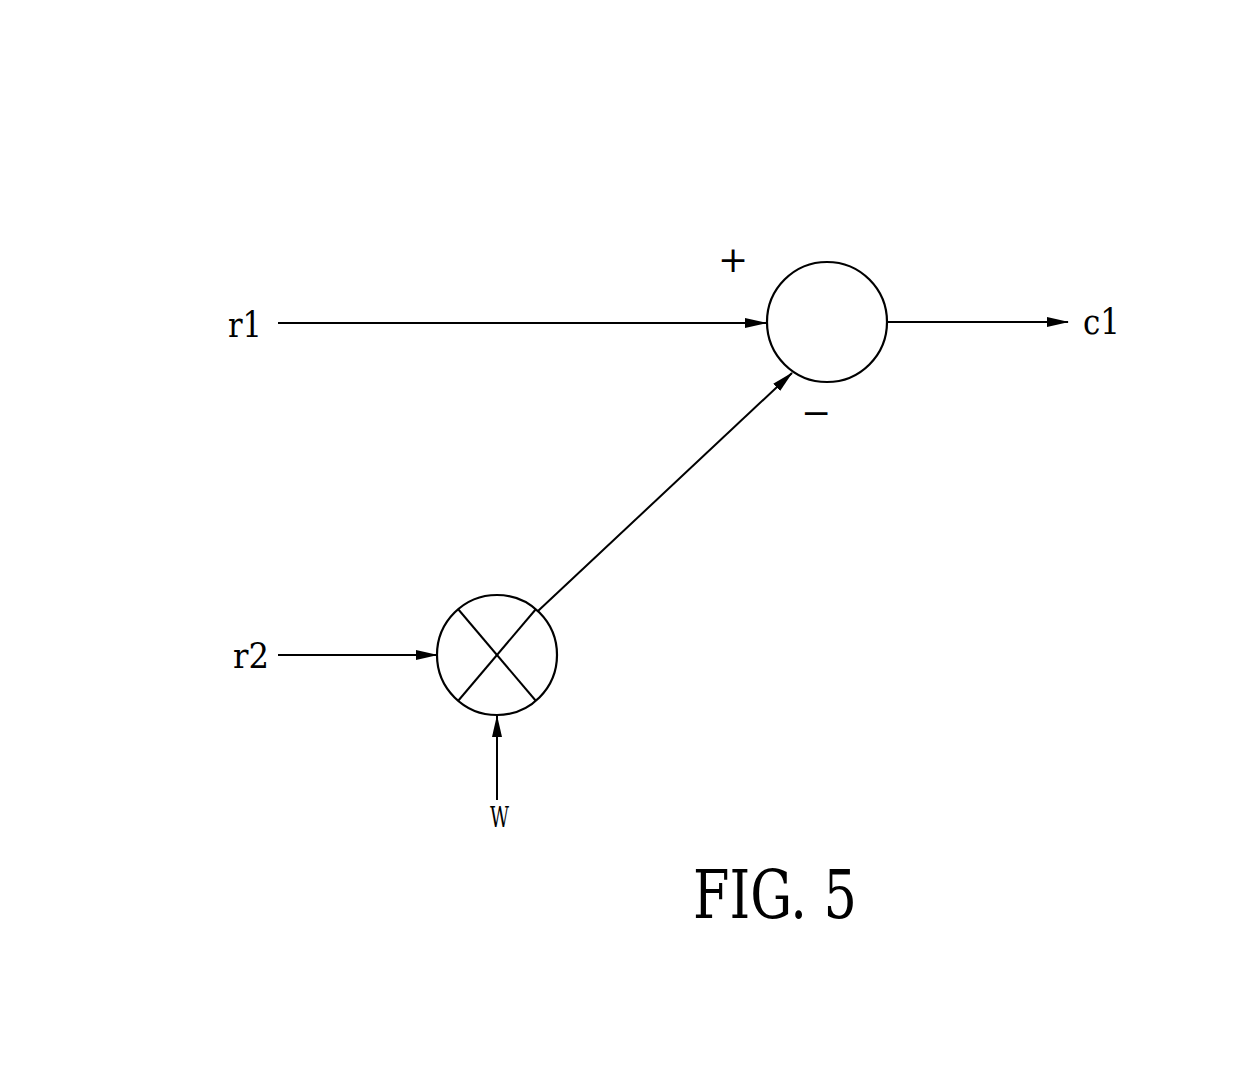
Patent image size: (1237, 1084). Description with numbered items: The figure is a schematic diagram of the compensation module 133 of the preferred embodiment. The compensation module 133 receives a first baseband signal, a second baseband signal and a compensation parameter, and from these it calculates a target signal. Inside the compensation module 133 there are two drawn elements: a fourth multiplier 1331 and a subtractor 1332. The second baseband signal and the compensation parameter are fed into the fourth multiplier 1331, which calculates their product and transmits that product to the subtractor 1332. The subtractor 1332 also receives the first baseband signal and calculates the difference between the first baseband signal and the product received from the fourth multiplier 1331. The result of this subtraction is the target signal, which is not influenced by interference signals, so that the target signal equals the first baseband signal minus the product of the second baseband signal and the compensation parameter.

The compensation module 133 is at (1065, 148).
The fourth multiplier 1331 is at (557, 655).
The subtractor 1332 is at (847, 262).